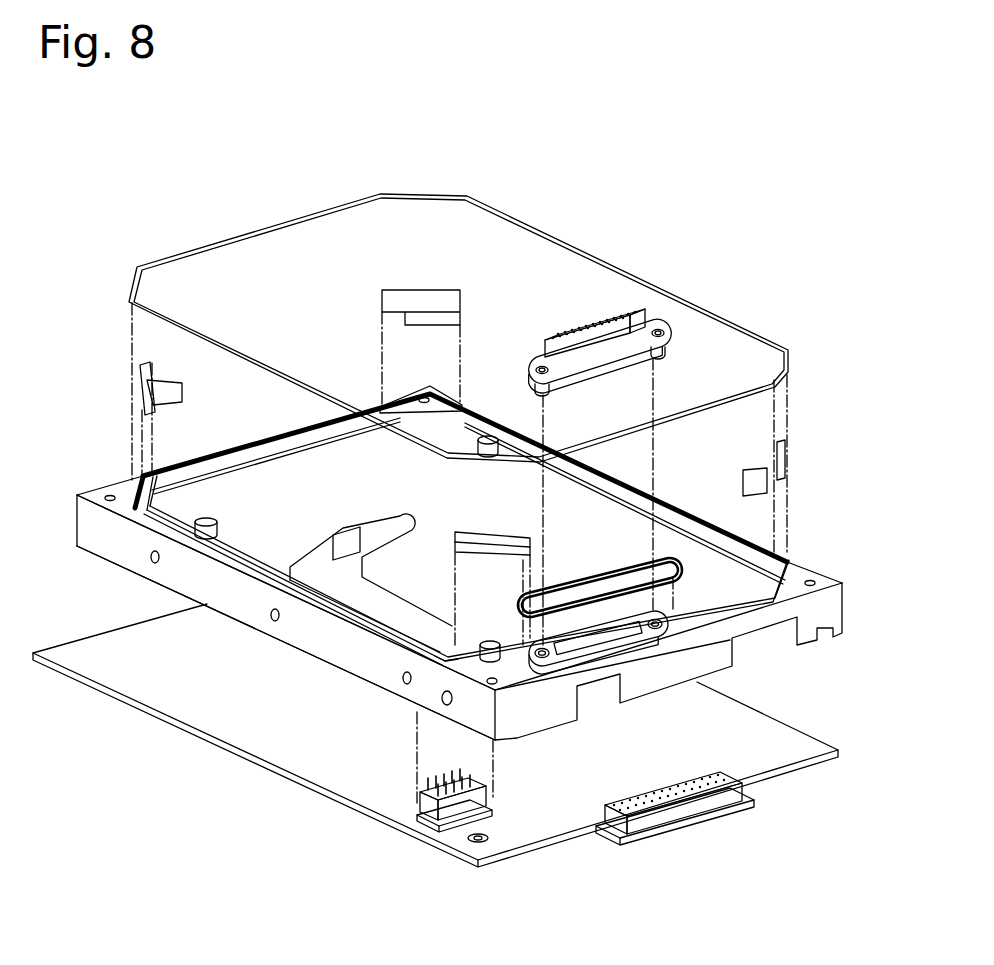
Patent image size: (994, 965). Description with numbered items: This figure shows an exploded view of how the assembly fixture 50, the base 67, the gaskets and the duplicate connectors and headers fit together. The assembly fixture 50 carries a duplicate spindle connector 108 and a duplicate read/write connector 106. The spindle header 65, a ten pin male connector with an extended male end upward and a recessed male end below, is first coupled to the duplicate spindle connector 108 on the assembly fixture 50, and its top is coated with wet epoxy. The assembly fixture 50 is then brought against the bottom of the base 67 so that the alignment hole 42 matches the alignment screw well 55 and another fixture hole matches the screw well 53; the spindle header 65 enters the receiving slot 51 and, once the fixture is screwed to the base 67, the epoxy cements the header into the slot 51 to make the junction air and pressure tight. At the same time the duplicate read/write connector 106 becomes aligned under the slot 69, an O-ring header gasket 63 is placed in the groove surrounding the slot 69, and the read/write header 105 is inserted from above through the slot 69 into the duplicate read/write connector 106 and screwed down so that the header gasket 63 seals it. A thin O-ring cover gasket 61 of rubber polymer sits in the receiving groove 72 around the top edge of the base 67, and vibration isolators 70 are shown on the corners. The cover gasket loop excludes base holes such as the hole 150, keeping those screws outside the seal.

The alignment hole 42 is at (477, 842).
The assembly fixture 50 is at (163, 697).
The slot 51 is at (423, 663).
The screw well 53 is at (488, 437).
The alignment screw well 55 is at (497, 668).
The cover gasket 61 is at (248, 232).
The header gasket 63 is at (697, 682).
The spindle header 65 is at (430, 805).
The base 67 is at (332, 637).
The slot 69 is at (607, 635).
The vibration isolators 70 is at (783, 410).
The receiving groove 72 is at (790, 562).
The read/write header 105 is at (660, 328).
The duplicate read/write connector 106 is at (680, 807).
The duplicate spindle connector 108 is at (430, 827).
The hole 150 is at (493, 685).